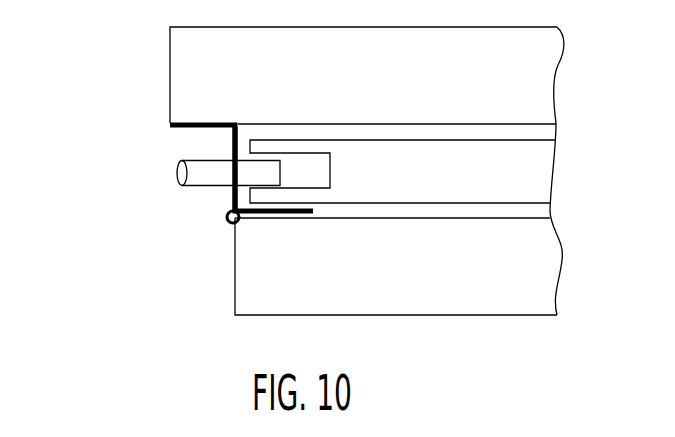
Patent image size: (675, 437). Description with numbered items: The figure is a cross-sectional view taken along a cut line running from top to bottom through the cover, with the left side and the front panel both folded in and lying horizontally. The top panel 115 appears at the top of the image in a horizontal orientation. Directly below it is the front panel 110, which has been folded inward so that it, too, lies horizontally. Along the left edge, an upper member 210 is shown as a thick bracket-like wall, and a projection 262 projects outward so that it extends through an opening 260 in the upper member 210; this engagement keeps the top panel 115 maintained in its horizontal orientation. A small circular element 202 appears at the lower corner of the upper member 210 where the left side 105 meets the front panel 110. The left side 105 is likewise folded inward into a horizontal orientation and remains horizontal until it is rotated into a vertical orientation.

The left side 105 is at (468, 302).
The front panel 110 is at (533, 169).
The top panel 115 is at (187, 68).
The pivot / hinge pin 202 is at (228, 226).
The upper member 210 is at (193, 127).
The opening 260 is at (230, 191).
The projection 262 is at (182, 173).